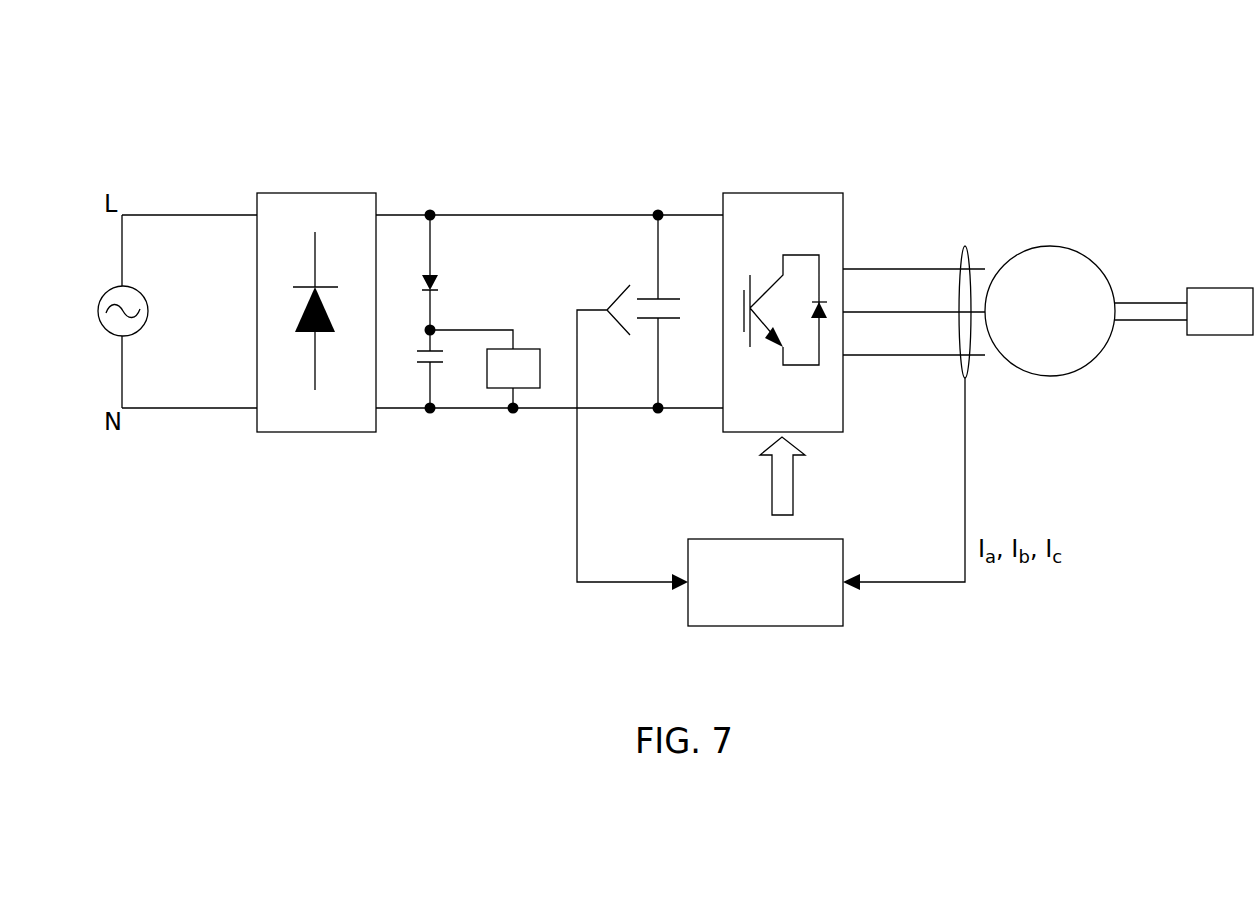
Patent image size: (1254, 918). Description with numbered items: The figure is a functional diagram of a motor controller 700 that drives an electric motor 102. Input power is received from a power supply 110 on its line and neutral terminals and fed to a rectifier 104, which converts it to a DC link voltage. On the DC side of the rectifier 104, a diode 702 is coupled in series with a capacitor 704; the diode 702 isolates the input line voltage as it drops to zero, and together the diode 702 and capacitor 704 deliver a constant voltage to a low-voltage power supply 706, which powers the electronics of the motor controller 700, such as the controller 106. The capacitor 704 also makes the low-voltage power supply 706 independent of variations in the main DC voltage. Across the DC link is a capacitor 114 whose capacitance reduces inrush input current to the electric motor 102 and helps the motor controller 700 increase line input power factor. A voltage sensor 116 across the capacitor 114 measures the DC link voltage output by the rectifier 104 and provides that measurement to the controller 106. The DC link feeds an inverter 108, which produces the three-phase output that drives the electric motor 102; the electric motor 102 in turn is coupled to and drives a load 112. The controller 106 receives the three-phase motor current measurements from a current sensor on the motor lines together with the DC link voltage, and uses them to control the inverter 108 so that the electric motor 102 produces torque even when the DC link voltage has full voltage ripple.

The motor controller 700 is at (1002, 104).
The electric motor 102 is at (1045, 361).
The rectifier 104 is at (291, 191).
The controller 106 is at (720, 538).
The inverter 108 is at (768, 192).
The power supply 110 is at (97, 303).
The load 112 is at (1241, 325).
The capacitor 114 is at (643, 300).
The voltage sensor 116 is at (633, 582).
The diode 702 is at (424, 283).
The capacitor 704 is at (420, 350).
The low-voltage power supply 706 is at (527, 347).